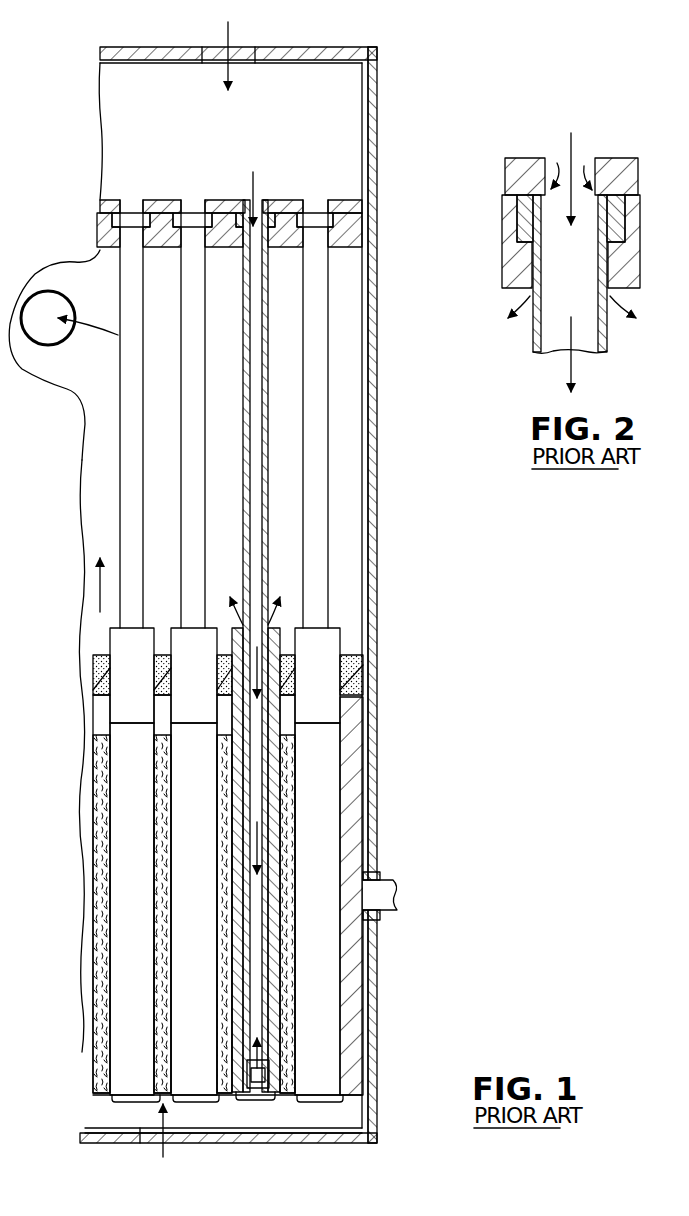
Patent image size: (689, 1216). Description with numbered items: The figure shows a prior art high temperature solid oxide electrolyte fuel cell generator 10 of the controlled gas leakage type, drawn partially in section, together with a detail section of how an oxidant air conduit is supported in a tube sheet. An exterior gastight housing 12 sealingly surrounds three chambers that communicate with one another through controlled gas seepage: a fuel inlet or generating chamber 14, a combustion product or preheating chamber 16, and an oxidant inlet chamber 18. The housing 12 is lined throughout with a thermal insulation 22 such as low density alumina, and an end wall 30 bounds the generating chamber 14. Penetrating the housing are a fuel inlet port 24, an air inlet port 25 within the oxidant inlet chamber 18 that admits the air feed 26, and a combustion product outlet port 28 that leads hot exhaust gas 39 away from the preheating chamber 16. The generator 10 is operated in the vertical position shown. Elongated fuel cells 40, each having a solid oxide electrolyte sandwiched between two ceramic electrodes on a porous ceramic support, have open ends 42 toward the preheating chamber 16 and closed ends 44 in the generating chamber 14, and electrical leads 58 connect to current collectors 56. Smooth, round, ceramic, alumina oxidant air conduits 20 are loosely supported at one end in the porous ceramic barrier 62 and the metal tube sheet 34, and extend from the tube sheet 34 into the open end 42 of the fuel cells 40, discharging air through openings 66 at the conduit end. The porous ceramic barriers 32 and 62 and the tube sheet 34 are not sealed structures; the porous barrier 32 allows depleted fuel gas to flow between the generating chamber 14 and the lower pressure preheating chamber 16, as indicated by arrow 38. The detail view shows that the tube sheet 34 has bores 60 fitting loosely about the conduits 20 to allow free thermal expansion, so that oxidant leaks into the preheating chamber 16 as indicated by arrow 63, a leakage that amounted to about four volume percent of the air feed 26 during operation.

In FIG. 1, the fuel cell generator 10 is at (414, 421).
In FIG. 1, the housing 12 is at (368, 274).
In FIG. 1, the generating chamber 14 is at (67, 911).
In FIG. 1, the preheating chamber 16 is at (112, 423).
In FIG. 1, the oxidant inlet chamber 18 is at (137, 125).
In FIG. 1, the oxidant air conduits 20 is at (143, 388).
In FIG. 2, the oxidant air conduits 20 is at (603, 344).
In FIG. 1, the thermal insulation 22 is at (368, 333).
In FIG. 1, the fuel inlet port 24 is at (172, 1127).
In FIG. 1, the air inlet port 25 is at (243, 47).
In FIG. 1, the air feed 26 is at (226, 32).
In FIG. 2, the air feed 26 is at (574, 140).
In FIG. 1, the combustion product outlet port 28 is at (46, 343).
In FIG. 1, the end wall 30 is at (242, 1129).
In FIG. 1, the porous ceramic barrier 32 is at (94, 680).
In FIG. 1, the tube sheet 34 is at (348, 200).
In FIG. 2, the tube sheet 34 is at (618, 158).
In FIG. 1, the arrow 38 is at (98, 596).
In FIG. 1, the hot exhaust gas 39 is at (143, 350).
In FIG. 1, the fuel cells 40 is at (147, 907).
In FIG. 1, the open end 42 is at (110, 629).
In FIG. 1, the closed end 44 is at (130, 1100).
In FIG. 1, the current collectors 56 is at (360, 984).
In FIG. 1, the electrical leads 58 is at (380, 892).
In FIG. 2, the bores 60 is at (534, 229).
In FIG. 1, the insulation 62 is at (358, 248).
In FIG. 2, the insulation 62 is at (508, 261).
In FIG. 2, the arrow 63 is at (561, 157).
In FIG. 1, the openings 66 is at (260, 1088).